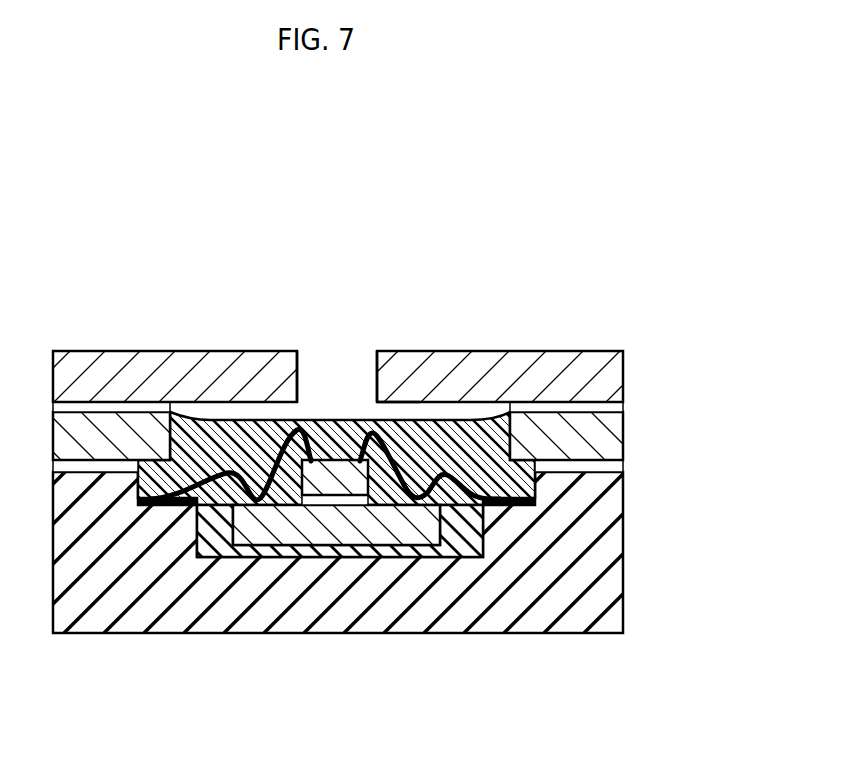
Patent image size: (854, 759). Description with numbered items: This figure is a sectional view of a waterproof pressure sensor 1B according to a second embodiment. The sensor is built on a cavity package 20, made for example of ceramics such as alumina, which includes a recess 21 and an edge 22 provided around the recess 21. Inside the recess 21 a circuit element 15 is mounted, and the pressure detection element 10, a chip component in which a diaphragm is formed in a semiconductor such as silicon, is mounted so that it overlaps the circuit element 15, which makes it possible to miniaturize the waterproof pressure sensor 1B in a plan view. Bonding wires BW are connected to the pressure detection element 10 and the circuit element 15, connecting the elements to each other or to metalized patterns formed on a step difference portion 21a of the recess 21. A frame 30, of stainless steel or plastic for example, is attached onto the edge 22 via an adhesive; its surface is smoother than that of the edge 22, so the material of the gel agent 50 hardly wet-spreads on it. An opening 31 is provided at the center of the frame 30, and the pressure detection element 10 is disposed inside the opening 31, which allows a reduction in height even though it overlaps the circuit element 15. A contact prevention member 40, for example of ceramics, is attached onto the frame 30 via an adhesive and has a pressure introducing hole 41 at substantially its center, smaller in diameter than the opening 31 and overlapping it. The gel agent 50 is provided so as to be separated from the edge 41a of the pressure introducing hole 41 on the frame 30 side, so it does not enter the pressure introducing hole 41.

The waterproof pressure sensor 1B is at (683, 257).
The pressure detection element 10 is at (335, 493).
The circuit element 15 is at (290, 525).
The cavity package 20 is at (602, 585).
The recess 21 is at (482, 538).
The step difference portion 21a is at (138, 492).
The edge 22 is at (592, 464).
The frame 30 is at (605, 437).
The opening 31 is at (278, 412).
The contact prevention member 40 is at (600, 378).
The pressure introducing hole 41 is at (340, 385).
The edge of the pressure introducing hole 41a is at (371, 406).
The gel agent 50 is at (433, 438).
The bonding wires BW is at (245, 467).